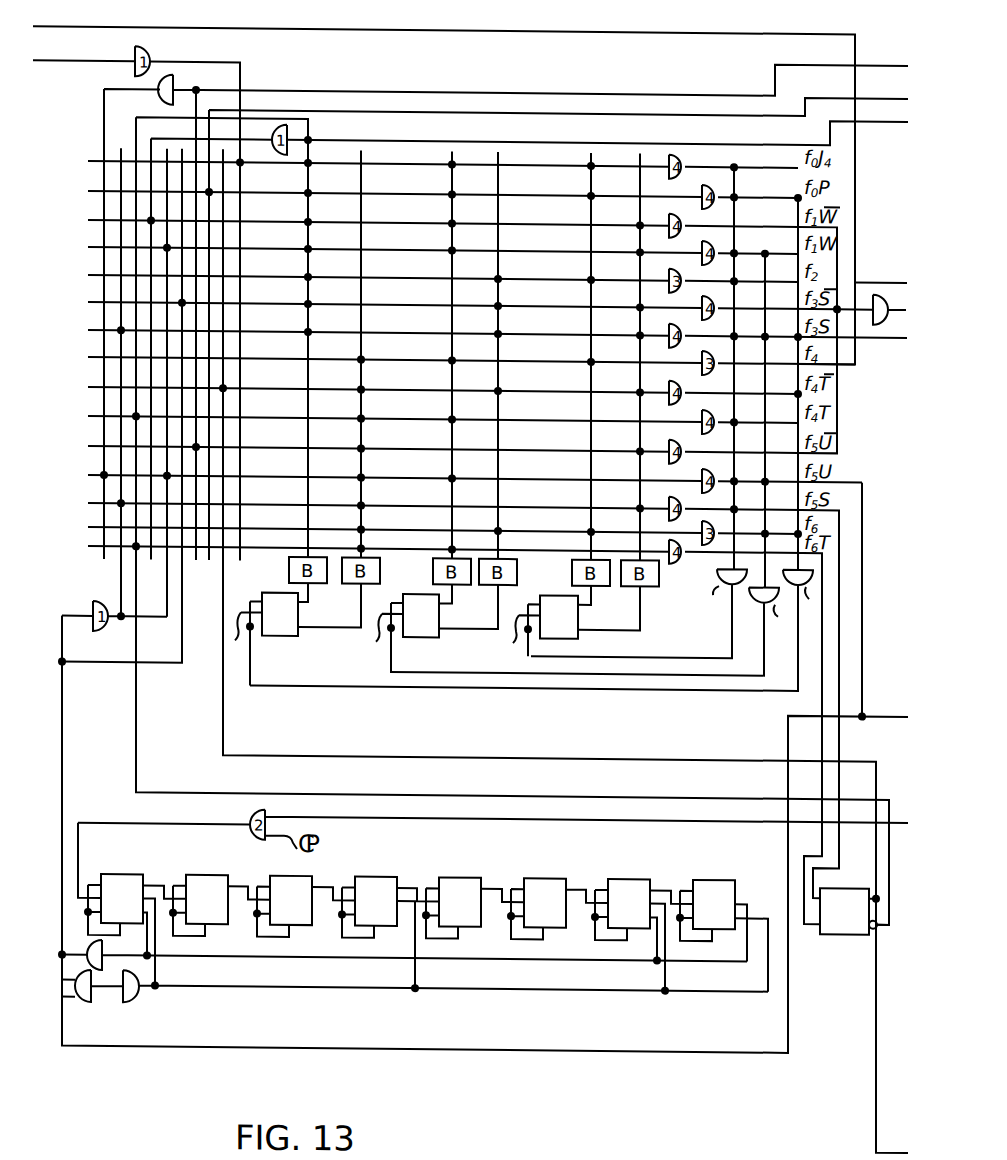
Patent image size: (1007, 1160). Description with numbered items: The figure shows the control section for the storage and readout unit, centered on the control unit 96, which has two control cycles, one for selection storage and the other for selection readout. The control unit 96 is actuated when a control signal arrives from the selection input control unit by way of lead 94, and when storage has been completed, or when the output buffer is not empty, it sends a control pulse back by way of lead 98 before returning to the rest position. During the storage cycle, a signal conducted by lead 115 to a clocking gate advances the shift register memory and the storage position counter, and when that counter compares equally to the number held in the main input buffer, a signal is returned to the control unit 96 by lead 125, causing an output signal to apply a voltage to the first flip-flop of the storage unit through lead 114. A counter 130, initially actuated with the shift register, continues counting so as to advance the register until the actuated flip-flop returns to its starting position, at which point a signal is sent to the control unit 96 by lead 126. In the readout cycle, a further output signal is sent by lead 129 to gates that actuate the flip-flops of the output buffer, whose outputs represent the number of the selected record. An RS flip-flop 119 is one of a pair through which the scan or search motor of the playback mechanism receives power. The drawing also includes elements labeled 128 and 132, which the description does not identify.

The lead 94 is at (79, 62).
The control unit 96 is at (440, 83).
The lead 98 is at (560, 30).
The lead 114 is at (893, 274).
The lead 115 is at (898, 306).
The RS flip-flop 119 is at (845, 926).
The lead 125 is at (600, 138).
The lead 126 is at (289, 633).
The AND gates 128 is at (692, 580).
The lead 129 is at (862, 612).
The counter 130 is at (74, 937).
The JK flip-flop shift register 132 is at (207, 872).